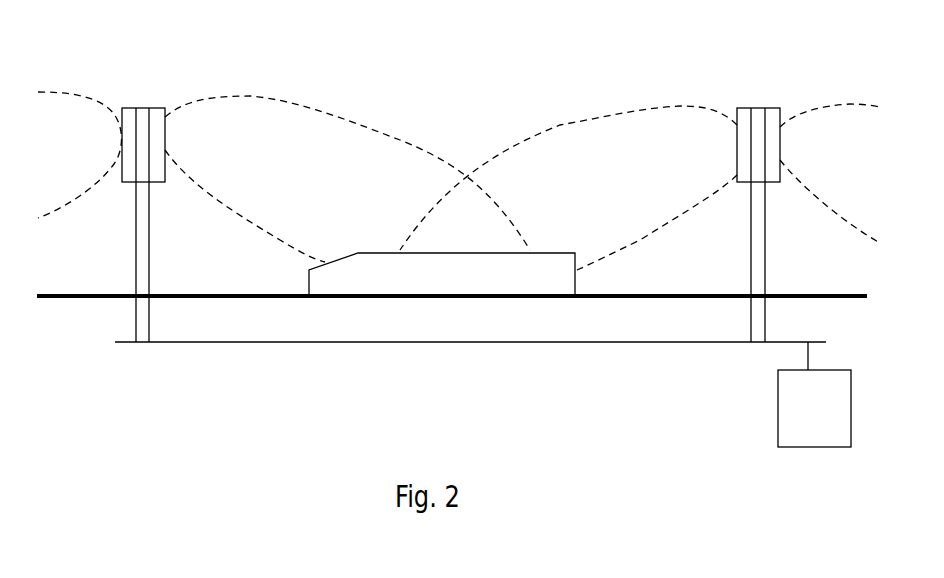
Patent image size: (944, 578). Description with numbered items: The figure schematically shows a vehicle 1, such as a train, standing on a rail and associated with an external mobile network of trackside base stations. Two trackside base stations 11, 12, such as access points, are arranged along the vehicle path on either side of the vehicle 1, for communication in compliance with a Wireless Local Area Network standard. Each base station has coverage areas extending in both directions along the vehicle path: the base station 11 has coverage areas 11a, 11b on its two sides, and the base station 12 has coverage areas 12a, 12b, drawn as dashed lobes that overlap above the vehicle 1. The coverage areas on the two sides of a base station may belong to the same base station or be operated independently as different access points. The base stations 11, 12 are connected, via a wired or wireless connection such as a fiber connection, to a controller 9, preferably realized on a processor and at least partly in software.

The vehicle 1 is at (553, 278).
The controller 9 is at (777, 413).
The trackside base station 11 is at (143, 113).
The coverage area 11a is at (53, 90).
The coverage area 11b is at (320, 105).
The trackside base station 12 is at (753, 105).
The coverage area 12a is at (647, 105).
The coverage area 12b is at (857, 103).